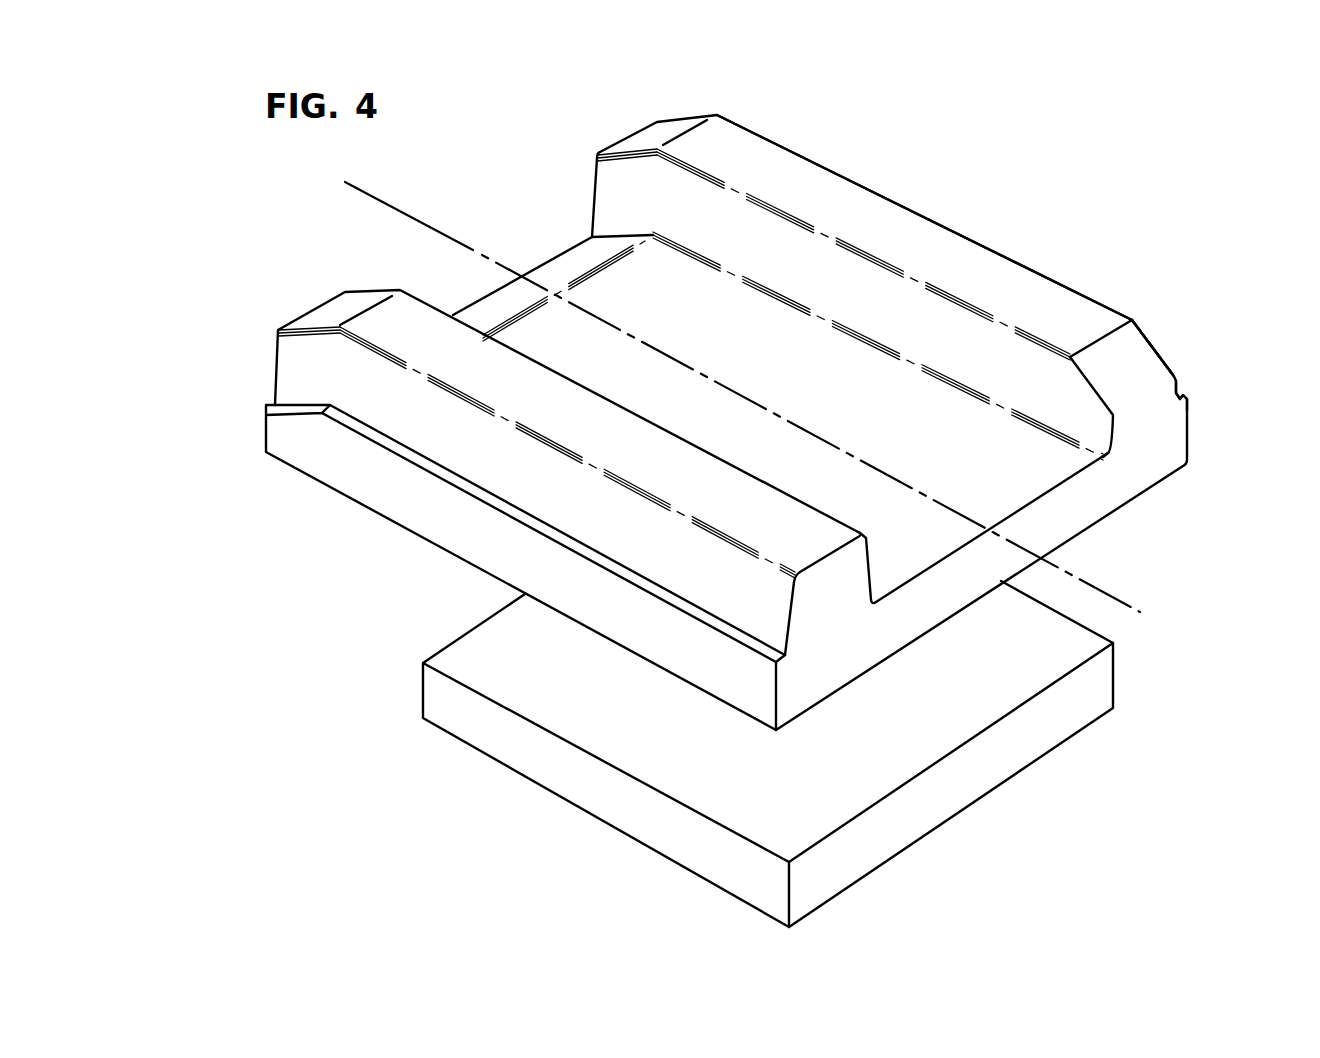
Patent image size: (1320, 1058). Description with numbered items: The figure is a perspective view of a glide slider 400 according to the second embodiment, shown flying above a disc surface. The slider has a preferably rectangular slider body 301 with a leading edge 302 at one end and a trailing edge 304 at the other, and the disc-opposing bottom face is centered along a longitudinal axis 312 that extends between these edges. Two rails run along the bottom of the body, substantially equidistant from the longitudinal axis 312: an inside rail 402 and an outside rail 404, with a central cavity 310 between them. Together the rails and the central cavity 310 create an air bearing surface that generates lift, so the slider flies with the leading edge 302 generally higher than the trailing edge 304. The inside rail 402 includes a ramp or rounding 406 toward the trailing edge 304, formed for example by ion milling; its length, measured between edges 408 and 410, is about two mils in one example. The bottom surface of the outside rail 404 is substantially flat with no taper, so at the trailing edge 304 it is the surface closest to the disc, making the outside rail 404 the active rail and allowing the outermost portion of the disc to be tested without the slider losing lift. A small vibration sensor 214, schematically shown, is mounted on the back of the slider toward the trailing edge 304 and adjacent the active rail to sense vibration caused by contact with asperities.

The vibration sensor 214 is at (1045, 662).
The slider body 301 is at (752, 422).
The leading edge 302 is at (566, 256).
The trailing edge 304 is at (1067, 488).
The central cavity 310 is at (773, 332).
The longitudinal axis 312 is at (1120, 594).
The glide slider 400 is at (808, 137).
The inside rail 402 is at (965, 250).
The outside rail 404 is at (457, 362).
The ramp 406 is at (1127, 340).
The edge 408 is at (1097, 333).
The edge 410 is at (1140, 403).